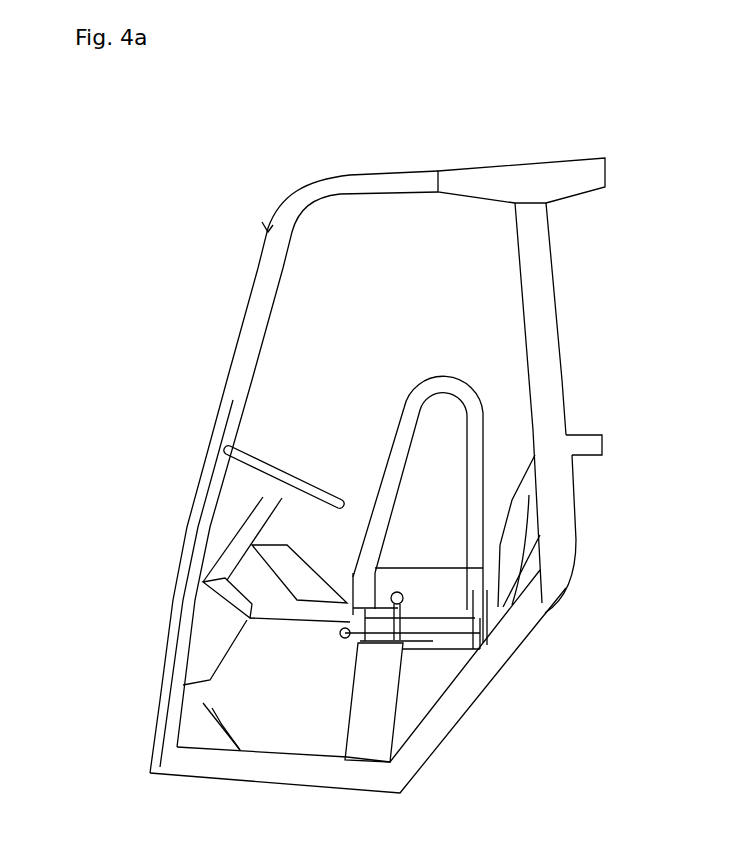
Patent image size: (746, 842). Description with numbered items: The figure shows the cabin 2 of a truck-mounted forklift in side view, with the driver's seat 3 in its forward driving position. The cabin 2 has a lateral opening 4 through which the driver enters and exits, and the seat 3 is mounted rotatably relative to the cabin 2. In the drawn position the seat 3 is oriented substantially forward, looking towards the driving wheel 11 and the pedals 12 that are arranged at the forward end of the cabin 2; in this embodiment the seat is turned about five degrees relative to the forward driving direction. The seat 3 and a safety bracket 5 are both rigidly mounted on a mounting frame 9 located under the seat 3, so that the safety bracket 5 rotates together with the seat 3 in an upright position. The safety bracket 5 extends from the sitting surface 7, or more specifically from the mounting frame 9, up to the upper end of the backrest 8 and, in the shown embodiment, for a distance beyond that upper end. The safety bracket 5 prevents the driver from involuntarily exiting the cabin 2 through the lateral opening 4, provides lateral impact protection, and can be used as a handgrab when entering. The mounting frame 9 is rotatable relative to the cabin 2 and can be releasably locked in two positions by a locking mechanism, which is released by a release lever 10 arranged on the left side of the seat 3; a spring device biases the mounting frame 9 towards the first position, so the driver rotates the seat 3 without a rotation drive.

The cabin 2 is at (545, 130).
The seat 3 is at (603, 420).
The lateral opening 4 is at (500, 537).
The safety bracket 5 is at (478, 423).
The sitting surface 7 is at (418, 572).
The backrest 8 is at (527, 500).
The mounting frame 9 is at (450, 623).
The release lever 10 is at (398, 609).
The driving wheel 11 is at (262, 474).
The pedals 12 is at (220, 725).